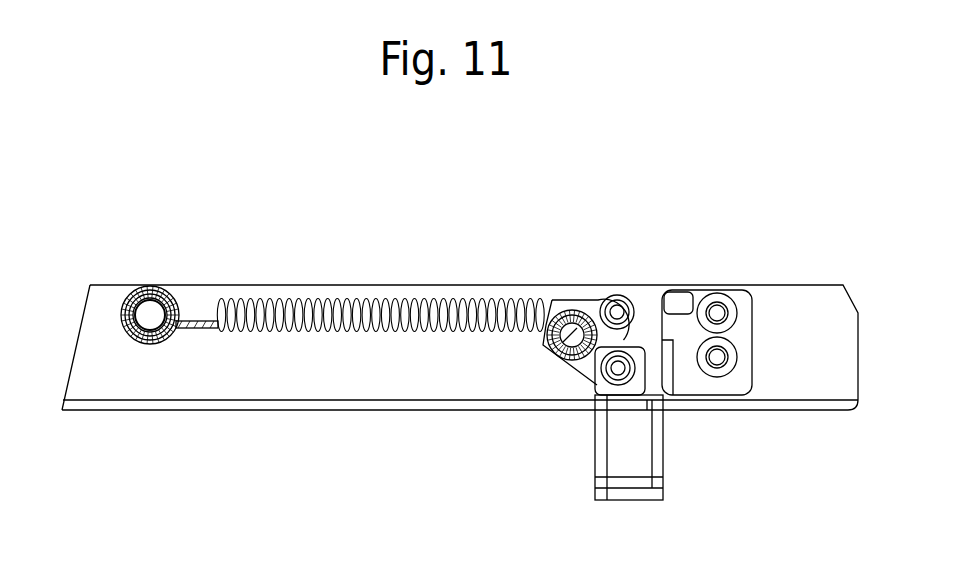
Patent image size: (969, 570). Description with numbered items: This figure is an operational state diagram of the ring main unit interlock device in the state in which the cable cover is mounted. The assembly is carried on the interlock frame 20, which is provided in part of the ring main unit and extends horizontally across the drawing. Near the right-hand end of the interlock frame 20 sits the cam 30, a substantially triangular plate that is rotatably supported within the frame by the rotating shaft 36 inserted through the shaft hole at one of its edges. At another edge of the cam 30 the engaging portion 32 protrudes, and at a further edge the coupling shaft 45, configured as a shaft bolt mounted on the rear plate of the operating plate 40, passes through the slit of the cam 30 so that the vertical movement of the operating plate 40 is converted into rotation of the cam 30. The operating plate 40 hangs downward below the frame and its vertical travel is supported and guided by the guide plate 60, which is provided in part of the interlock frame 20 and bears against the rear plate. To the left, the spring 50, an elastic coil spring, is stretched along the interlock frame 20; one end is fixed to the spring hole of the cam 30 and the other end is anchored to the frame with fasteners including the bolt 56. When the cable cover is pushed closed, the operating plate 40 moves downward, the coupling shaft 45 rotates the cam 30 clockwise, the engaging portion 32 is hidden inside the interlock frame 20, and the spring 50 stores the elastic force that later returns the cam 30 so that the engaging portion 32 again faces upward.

The interlock frame 20 is at (120, 365).
The bolt 56 is at (163, 342).
The spring 50 is at (307, 332).
The cam 30 is at (673, 362).
The rotating shaft 36 is at (552, 355).
The coupling shaft 45 is at (597, 377).
The operating plate 40 is at (597, 443).
The guide plate 60 is at (748, 350).
The engaging portion 32 is at (694, 316).